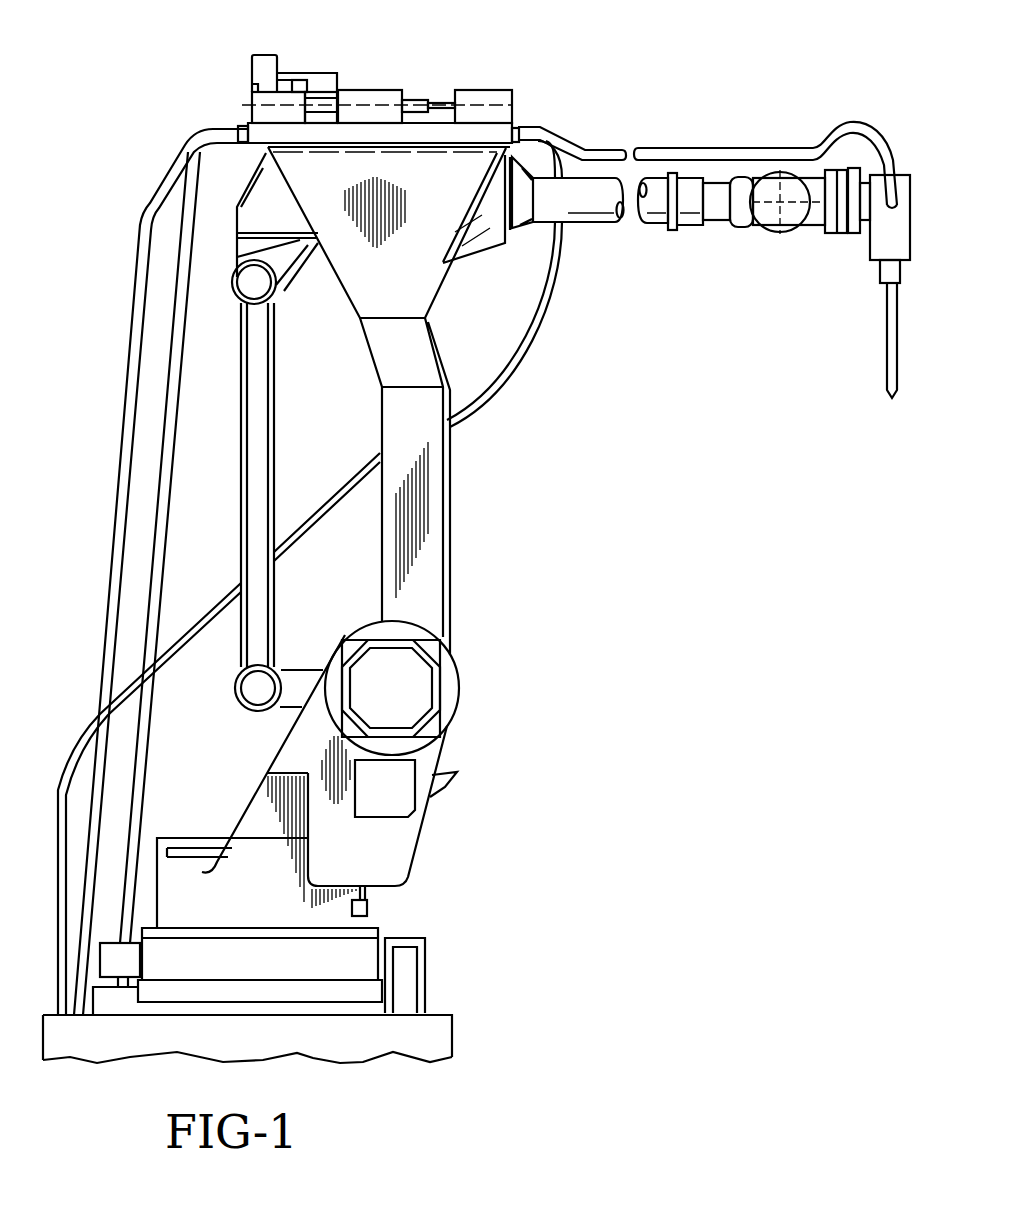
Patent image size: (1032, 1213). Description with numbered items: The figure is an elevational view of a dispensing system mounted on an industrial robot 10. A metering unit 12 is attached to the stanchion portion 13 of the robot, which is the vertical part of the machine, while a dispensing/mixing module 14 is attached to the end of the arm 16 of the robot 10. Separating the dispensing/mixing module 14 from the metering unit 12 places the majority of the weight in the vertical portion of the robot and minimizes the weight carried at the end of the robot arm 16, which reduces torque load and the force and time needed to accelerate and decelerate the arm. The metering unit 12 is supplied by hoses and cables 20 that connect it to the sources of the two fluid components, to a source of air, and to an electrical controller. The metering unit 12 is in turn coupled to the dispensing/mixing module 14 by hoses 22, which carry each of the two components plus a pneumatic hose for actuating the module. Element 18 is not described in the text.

The industrial robot 10 is at (444, 862).
The metering unit 12 is at (382, 80).
The stanchion portion 13 is at (432, 503).
The dispensing/mixing module 14 is at (912, 162).
The arm 16 is at (660, 228).
The welding electrode 18 is at (887, 337).
The hoses and cables 20 is at (70, 686).
The hoses 22 is at (690, 134).